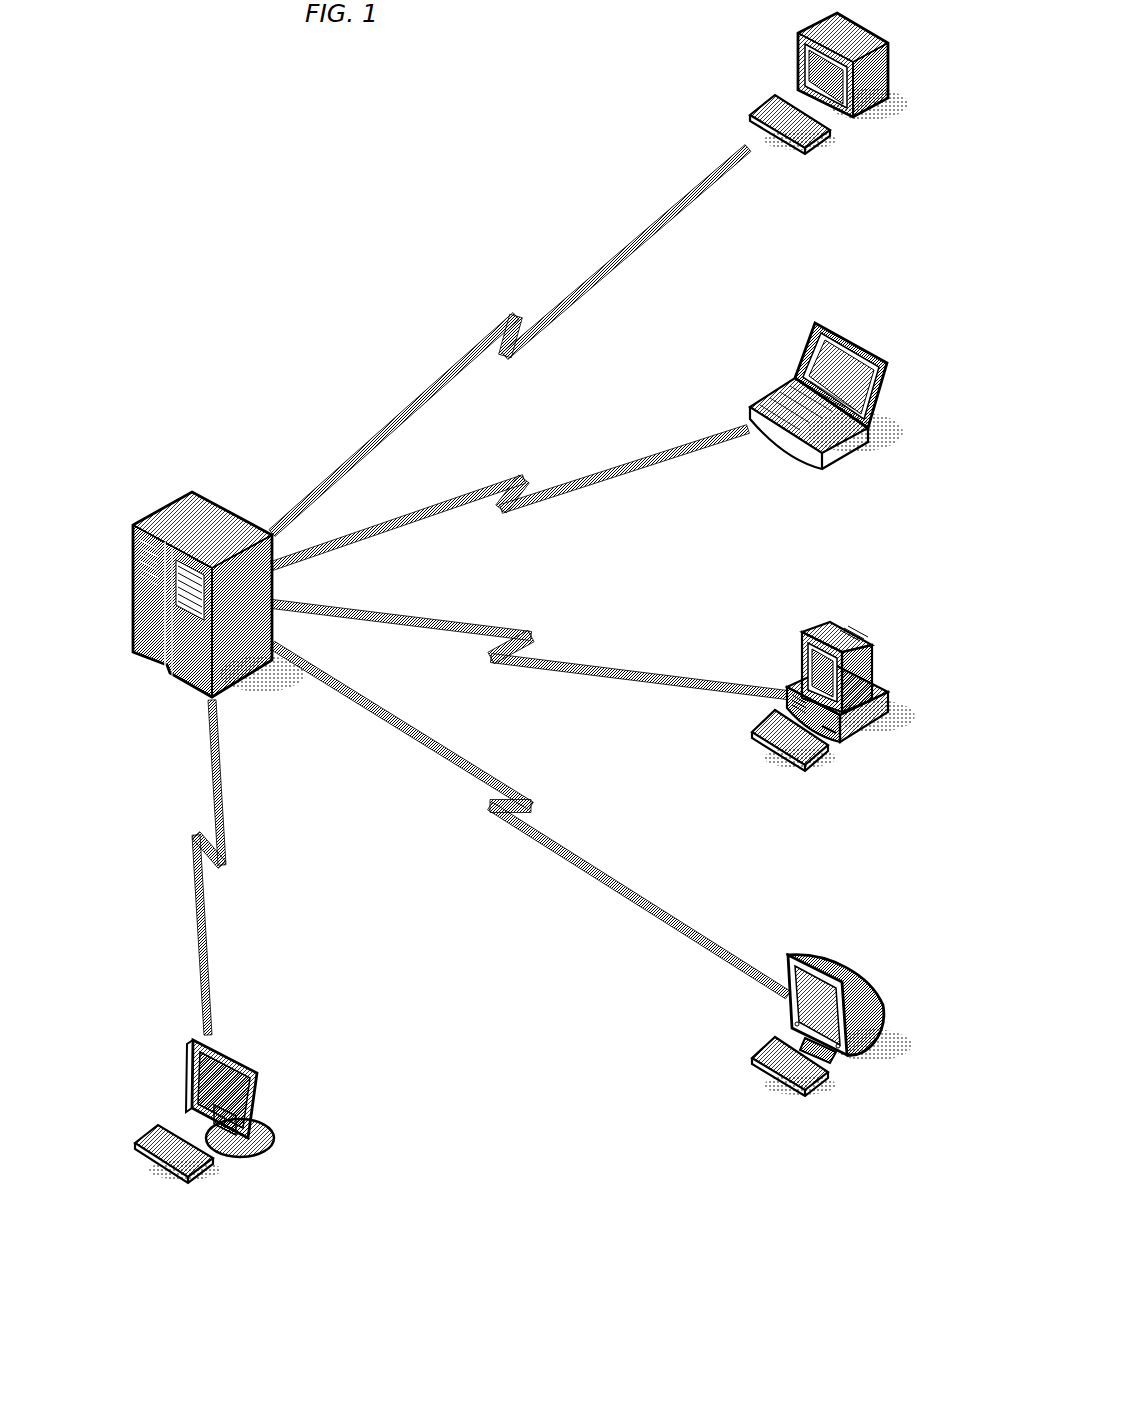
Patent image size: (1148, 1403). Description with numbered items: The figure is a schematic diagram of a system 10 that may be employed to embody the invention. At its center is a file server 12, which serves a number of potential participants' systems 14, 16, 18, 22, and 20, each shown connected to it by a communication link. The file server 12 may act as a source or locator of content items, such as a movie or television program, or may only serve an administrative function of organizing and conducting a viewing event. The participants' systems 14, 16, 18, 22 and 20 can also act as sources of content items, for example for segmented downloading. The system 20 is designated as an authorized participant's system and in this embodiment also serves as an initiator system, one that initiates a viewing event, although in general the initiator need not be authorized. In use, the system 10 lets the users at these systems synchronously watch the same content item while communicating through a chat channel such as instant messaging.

The system 10 is at (254, 284).
The file server 12 is at (218, 612).
The potential participant's system 14 is at (829, 98).
The potential participant's system 16 is at (826, 403).
The potential participant's system 18 is at (833, 710).
The authorized participant's initiator system 20 is at (220, 1140).
The potential participant's system 22 is at (832, 1040).